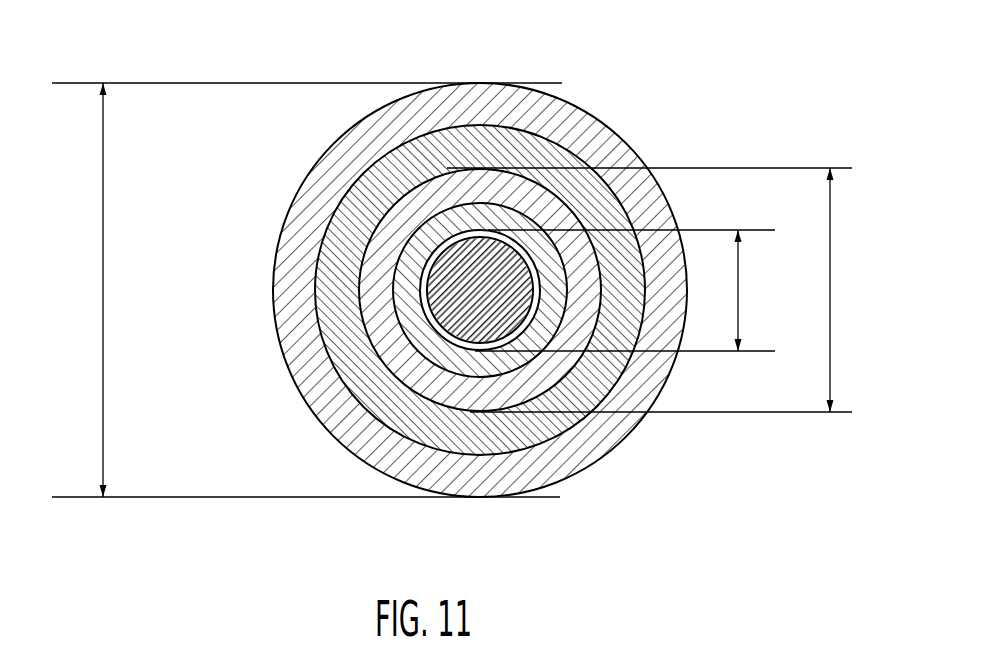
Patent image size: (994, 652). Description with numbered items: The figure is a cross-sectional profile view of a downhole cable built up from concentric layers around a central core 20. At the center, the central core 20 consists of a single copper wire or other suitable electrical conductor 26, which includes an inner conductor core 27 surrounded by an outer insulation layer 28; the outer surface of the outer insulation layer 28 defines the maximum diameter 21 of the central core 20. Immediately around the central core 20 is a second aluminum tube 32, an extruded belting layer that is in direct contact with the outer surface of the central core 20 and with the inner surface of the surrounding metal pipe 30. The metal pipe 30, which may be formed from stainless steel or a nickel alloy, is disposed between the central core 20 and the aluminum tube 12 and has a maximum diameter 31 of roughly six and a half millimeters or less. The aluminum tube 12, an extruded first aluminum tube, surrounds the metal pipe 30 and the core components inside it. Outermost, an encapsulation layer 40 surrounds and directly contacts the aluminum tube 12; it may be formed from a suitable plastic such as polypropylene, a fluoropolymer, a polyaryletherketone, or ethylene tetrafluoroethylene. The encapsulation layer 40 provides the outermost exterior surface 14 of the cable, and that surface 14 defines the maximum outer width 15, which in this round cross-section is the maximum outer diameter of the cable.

The aluminum tube 12 is at (523, 136).
The outermost exterior surface 14 is at (283, 215).
The maximum outer width 15 is at (103, 280).
The central core 20 is at (544, 256).
The maximum diameter 21 is at (738, 297).
The electrical conductor 26 is at (471, 327).
The inner conductor core 27 is at (499, 314).
The outer insulation layer 28 is at (426, 317).
The metal pipe 30 is at (528, 179).
The maximum diameter 31 is at (832, 275).
The second aluminum tube 32 is at (523, 212).
The encapsulation layer 40 is at (488, 84).